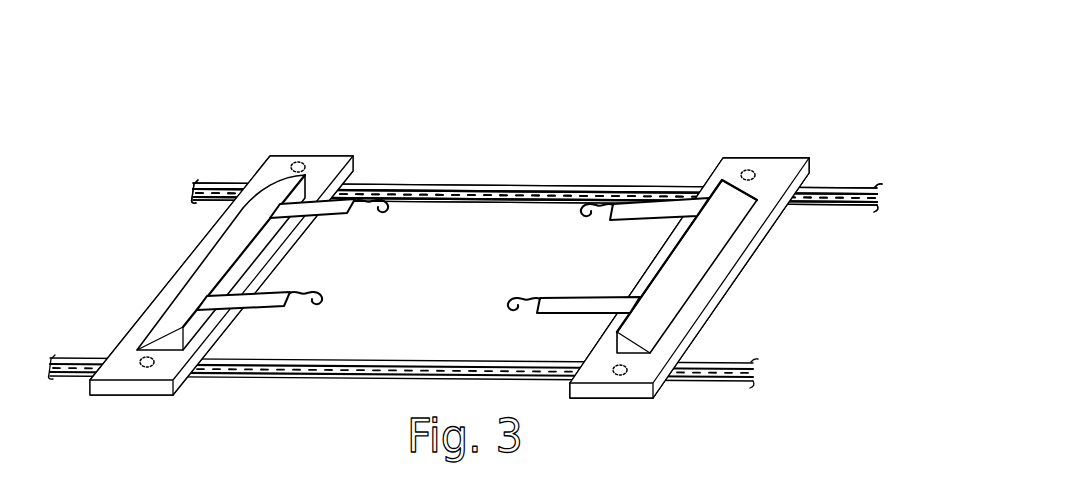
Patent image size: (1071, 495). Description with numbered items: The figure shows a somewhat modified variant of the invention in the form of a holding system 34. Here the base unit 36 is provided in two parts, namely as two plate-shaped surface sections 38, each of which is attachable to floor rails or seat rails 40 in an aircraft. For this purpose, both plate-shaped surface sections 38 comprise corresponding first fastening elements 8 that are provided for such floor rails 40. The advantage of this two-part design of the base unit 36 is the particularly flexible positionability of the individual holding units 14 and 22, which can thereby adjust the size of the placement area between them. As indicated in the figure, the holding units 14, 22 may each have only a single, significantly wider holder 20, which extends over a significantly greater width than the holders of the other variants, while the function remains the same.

The first fastening element 8 is at (142, 359).
The holding unit 14 is at (195, 217).
The holder 20 is at (183, 308).
The holding unit 22 is at (730, 315).
The holding system 34 is at (622, 123).
The base unit 36 is at (734, 125).
The plate-shaped surface section 38 is at (323, 167).
The floor rail 40 is at (478, 184).